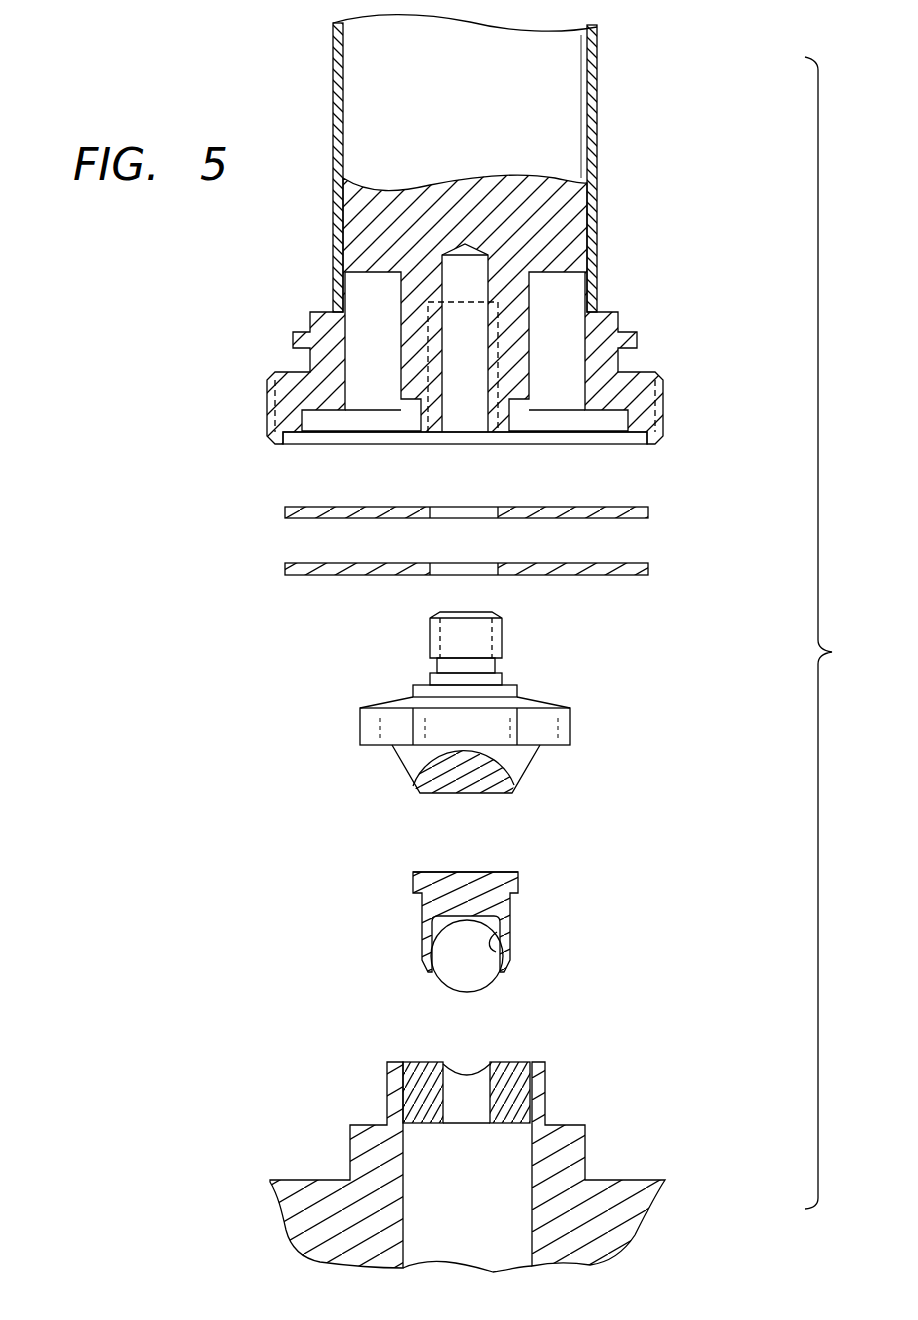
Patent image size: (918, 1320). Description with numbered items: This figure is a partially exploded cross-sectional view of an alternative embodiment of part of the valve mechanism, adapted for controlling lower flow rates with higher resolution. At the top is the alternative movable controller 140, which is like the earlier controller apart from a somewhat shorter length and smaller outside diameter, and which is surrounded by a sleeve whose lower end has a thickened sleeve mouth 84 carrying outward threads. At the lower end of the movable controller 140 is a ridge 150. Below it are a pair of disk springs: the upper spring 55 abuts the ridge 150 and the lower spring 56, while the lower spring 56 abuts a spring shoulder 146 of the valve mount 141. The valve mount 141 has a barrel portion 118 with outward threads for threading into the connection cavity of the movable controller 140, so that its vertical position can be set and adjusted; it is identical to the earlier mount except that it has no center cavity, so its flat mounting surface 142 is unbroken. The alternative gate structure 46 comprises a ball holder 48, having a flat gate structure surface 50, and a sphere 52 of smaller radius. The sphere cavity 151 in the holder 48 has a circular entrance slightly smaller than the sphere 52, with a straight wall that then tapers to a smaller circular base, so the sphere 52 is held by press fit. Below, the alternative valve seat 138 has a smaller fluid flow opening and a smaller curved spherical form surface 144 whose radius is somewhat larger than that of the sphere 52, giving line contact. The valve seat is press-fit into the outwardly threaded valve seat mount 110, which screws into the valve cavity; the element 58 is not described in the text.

The movable controller 140 is at (530, 135).
The nozzle body 58 is at (598, 290).
The sleeve mouth 84 is at (667, 404).
The ridge 150 is at (442, 420).
The upper spring 55 is at (310, 507).
The lower spring 56 is at (312, 576).
The barrel portion 118 is at (430, 636).
The spring shoulder 146 is at (510, 684).
The valve mount 141 is at (517, 722).
The flat mounting surface 142 is at (485, 796).
The flat gate structure surface 50 is at (440, 870).
The ball holder 48 is at (520, 885).
The gate structure 46 is at (459, 916).
The sphere cavity 151 is at (496, 934).
The sphere 52 is at (483, 976).
The spherical form surface 144 is at (442, 1066).
The valve seat 138 is at (530, 1062).
The valve seat mount 110 is at (627, 1194).